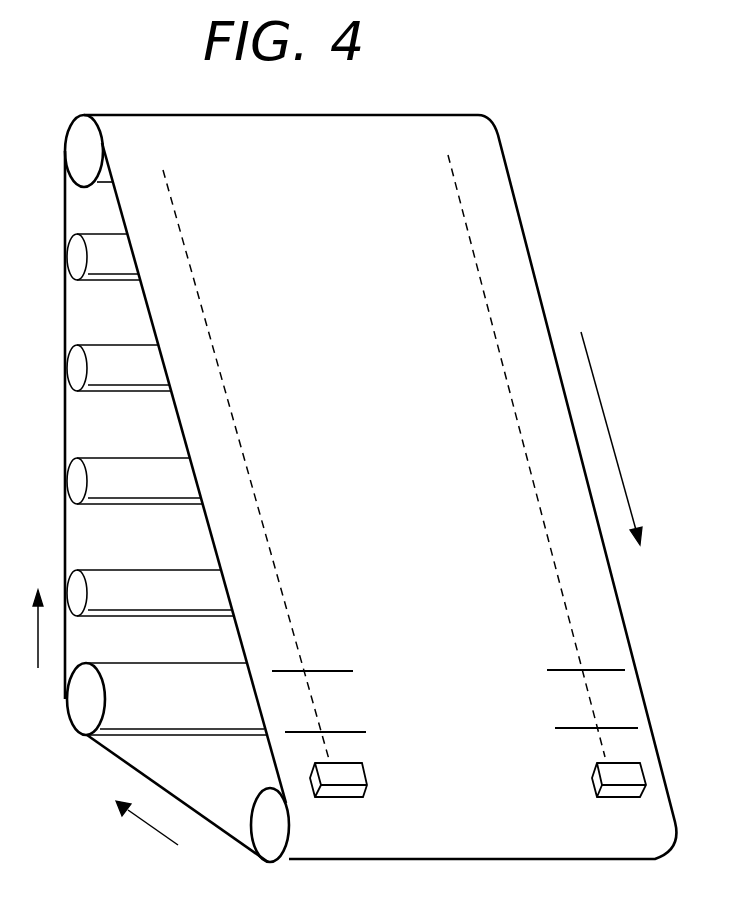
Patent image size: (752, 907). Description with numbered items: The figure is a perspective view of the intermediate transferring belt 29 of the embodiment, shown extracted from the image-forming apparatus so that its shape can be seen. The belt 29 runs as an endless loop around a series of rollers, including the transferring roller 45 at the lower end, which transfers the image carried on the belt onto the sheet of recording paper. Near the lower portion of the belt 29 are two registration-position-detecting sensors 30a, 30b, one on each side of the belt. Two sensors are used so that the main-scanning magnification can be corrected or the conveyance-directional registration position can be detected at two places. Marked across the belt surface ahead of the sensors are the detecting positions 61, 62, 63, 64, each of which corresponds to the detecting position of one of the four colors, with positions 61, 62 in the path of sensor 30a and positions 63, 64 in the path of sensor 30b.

The intermediate transferring belt 29 is at (530, 258).
The transferring roller 45 is at (261, 814).
The detecting position 61 is at (352, 731).
The detecting position 62 is at (339, 670).
The detecting position 63 is at (565, 728).
The detecting position 64 is at (560, 669).
The registration-position-detecting sensor 30a is at (349, 793).
The registration-position-detecting sensor 30b is at (607, 791).